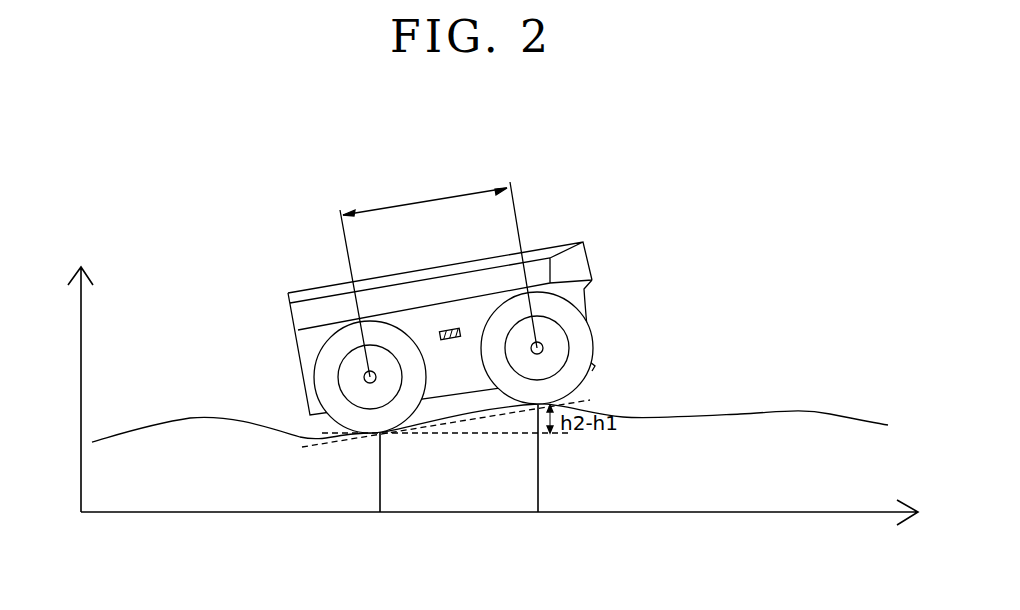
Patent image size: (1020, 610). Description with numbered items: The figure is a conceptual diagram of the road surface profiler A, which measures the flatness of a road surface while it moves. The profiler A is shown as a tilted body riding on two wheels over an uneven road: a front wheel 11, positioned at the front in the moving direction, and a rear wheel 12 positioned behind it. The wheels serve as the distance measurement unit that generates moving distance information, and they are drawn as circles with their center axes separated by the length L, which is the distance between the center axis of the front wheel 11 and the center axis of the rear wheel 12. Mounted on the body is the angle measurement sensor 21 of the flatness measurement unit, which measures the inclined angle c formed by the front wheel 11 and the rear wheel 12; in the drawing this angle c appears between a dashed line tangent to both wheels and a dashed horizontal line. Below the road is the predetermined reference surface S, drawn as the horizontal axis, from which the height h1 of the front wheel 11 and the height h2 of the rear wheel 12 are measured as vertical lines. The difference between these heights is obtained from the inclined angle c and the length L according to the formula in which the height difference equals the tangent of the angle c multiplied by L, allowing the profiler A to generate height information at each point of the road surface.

The front wheel 11 is at (568, 317).
The rear wheel 12 is at (332, 357).
The angle measurement sensor 21 is at (452, 330).
The road surface profiler A is at (537, 257).
The reference surface S is at (271, 505).
The length between wheel center axes L is at (438, 277).
The inclined angle c is at (447, 423).
The height of the front wheel h1 is at (378, 472).
The height of the rear wheel h2 is at (538, 458).